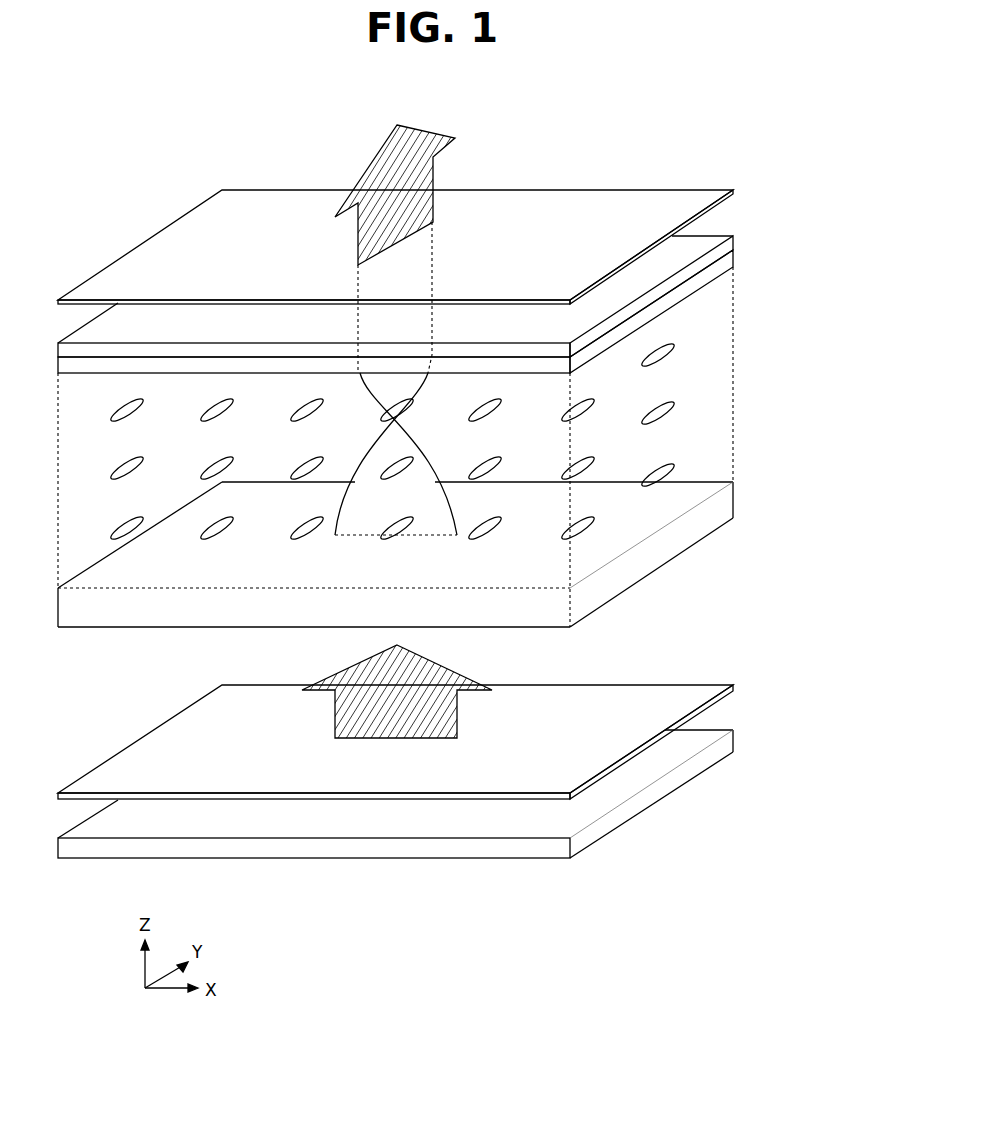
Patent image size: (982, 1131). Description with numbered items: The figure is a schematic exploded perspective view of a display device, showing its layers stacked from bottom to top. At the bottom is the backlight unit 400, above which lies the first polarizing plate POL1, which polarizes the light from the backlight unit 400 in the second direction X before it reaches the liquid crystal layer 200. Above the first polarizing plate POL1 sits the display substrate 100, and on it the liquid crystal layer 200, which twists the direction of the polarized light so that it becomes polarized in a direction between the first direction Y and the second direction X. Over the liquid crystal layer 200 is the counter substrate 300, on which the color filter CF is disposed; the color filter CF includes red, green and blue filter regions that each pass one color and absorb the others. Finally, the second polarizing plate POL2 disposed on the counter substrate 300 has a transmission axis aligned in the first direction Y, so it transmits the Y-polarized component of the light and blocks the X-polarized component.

The second polarizing plate POL2 is at (733, 192).
The color filter CF is at (733, 238).
The counter substrate 300 is at (733, 262).
The liquid crystal layer 200 is at (706, 407).
The display substrate 100 is at (733, 500).
The first polarizing plate POL1 is at (733, 688).
The backlight unit 400 is at (733, 745).